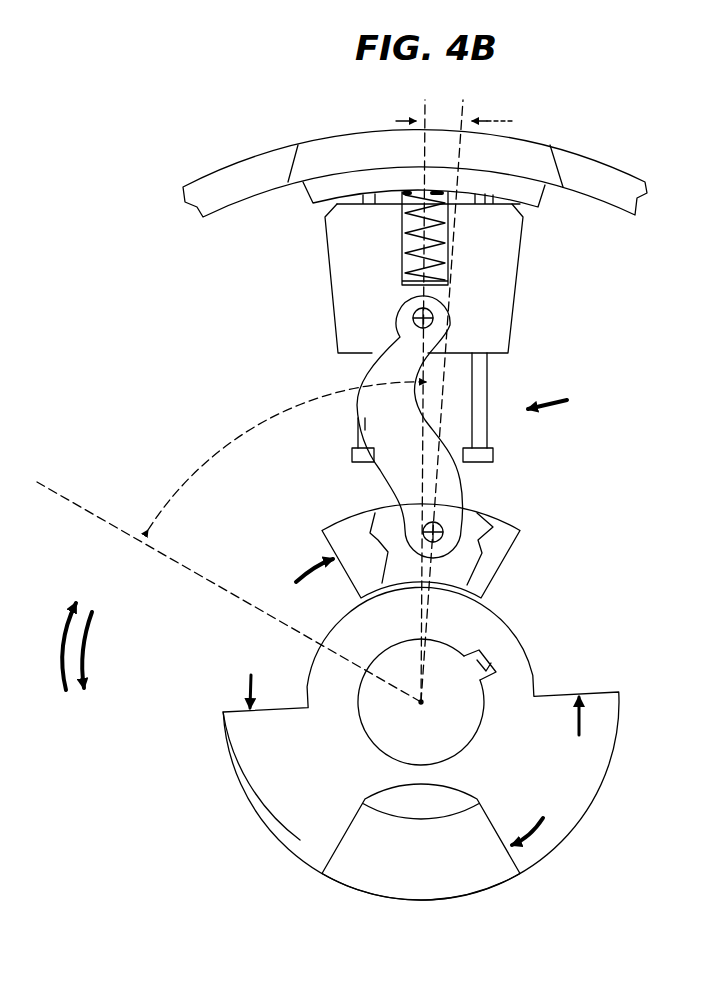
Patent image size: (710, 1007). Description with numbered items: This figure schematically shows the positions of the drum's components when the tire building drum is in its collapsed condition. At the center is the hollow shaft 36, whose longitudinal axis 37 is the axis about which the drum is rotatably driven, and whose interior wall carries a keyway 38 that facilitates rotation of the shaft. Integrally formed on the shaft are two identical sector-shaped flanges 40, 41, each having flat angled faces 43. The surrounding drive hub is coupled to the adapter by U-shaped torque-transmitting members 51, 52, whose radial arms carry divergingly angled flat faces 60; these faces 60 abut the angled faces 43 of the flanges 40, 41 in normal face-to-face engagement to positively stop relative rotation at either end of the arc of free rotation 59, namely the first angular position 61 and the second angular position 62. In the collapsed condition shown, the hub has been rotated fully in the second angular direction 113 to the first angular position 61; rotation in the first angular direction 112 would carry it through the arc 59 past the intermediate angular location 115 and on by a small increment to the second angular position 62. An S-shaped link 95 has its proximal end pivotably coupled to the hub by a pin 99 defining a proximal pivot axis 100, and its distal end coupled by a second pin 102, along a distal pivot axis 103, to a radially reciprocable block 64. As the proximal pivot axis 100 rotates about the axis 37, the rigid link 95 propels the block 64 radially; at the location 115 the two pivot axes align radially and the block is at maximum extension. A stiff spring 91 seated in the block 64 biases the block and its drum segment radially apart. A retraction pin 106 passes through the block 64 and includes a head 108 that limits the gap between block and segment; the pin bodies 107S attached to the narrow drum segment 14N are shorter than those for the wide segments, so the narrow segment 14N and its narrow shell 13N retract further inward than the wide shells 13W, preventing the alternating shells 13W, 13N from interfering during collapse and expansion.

The wide arcuate shell 13W is at (246, 166).
The narrow arcuate shell 13N is at (528, 153).
The narrow drum segment 14N is at (543, 198).
The intermediate angular location 115 is at (422, 108).
The second angular position 62 is at (465, 110).
The spring 91 is at (403, 240).
The block 64 is at (497, 274).
The second pin 102 is at (414, 304).
The distal pivot axis 103 is at (414, 322).
The arc of free rotation 59 is at (285, 413).
The link 95 is at (403, 429).
The shorter pin body 107S is at (358, 425).
The retraction pin 106 is at (567, 400).
The head 108 is at (352, 455).
The first angular position 61 is at (73, 504).
The proximal pivot axis 100 is at (442, 520).
The pin 99 is at (442, 546).
The torque-transmitting member 52 is at (371, 557).
The flat face 60 is at (420, 702).
The first angular direction 112 is at (58, 641).
The second angular direction 113 is at (83, 643).
The angled face 43 is at (415, 705).
The keyway 38 is at (493, 668).
The sector-shaped flange 40 is at (597, 638).
The longitudinal axis 37 is at (423, 704).
The hollow shaft 36 is at (433, 796).
The sector-shaped flange 41 is at (277, 800).
The torque-transmitting member 51 is at (479, 864).